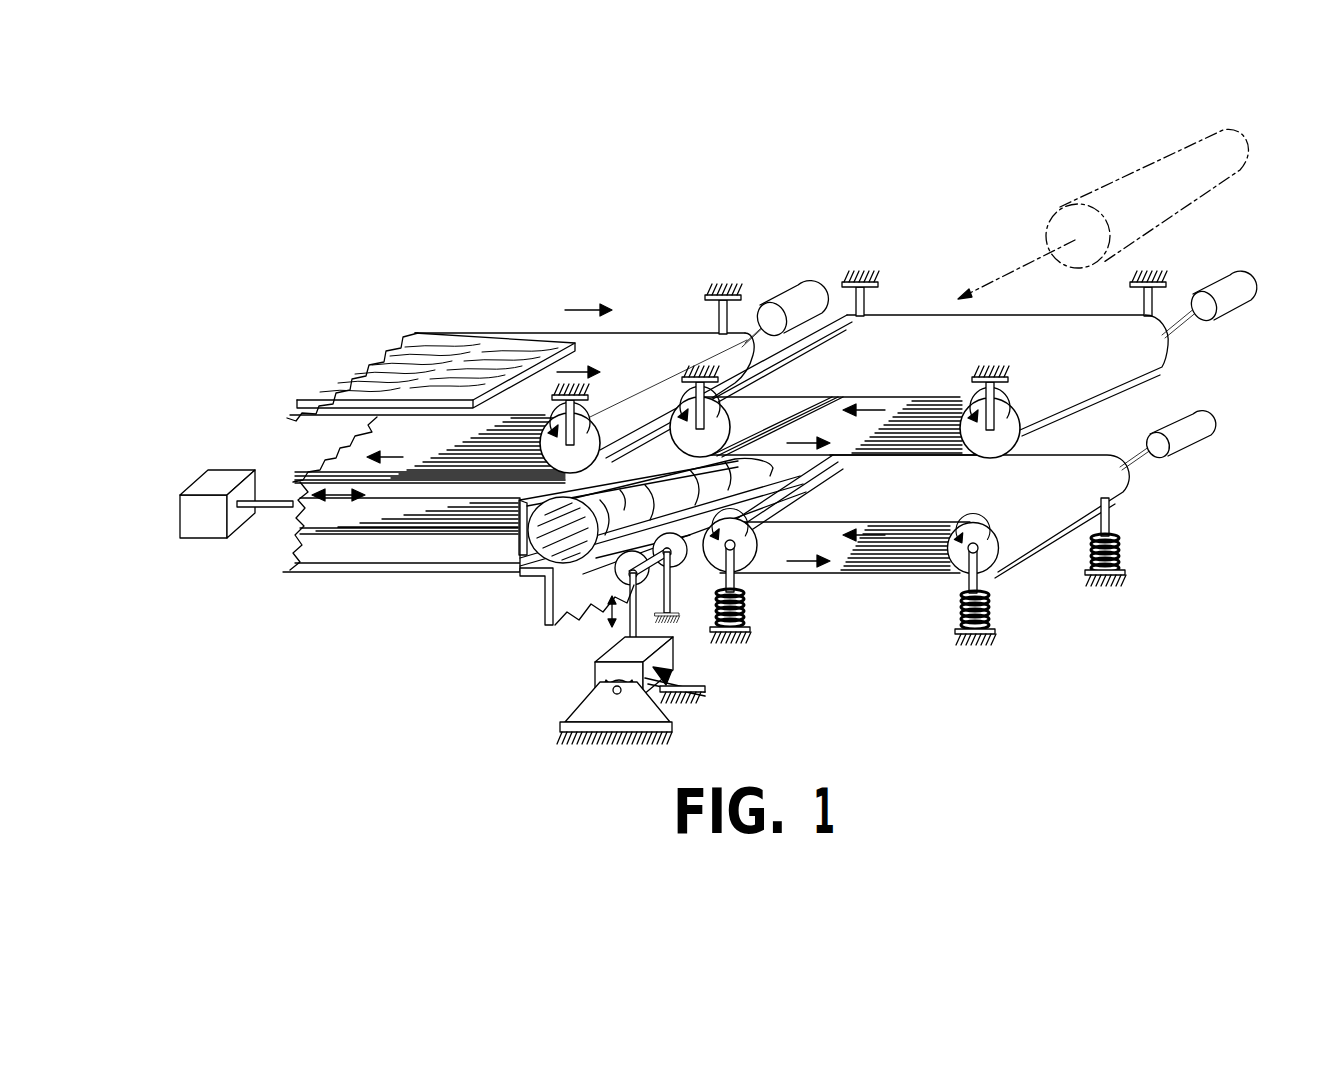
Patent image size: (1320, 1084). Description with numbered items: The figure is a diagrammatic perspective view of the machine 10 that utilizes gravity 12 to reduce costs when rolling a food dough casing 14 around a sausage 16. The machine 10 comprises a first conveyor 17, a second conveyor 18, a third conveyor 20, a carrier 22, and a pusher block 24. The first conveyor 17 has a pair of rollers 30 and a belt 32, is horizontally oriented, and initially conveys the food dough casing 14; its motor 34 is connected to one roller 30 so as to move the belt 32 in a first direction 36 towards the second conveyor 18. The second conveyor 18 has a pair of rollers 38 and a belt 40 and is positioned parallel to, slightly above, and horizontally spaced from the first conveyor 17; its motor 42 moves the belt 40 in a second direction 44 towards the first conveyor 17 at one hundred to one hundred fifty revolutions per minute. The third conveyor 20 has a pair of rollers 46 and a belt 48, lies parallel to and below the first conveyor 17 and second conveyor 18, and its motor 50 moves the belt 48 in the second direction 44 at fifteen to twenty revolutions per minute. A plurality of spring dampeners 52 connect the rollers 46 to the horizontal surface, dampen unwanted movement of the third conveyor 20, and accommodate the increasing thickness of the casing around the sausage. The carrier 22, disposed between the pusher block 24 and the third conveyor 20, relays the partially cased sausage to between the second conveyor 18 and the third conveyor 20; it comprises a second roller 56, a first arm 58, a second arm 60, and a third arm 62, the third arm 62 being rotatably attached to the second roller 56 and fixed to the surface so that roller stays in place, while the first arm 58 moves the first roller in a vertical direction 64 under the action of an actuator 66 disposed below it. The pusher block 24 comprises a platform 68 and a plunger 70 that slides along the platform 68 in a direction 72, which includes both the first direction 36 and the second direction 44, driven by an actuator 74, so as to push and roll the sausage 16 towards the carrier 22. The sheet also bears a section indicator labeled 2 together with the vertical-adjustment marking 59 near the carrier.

The machine 10 is at (795, 204).
The gravity 12 is at (657, 290).
The food dough casing 14 is at (365, 338).
The sausage 16 is at (515, 578).
The first conveyor 17 is at (478, 305).
The second conveyor 18 is at (905, 290).
The third conveyor 20 is at (836, 597).
The carrier 22 is at (655, 633).
The pusher block 24 is at (358, 556).
The rollers 30 is at (525, 432).
The belt 32 is at (694, 312).
The motor 34 is at (792, 272).
The first direction 36 is at (565, 310).
The rollers 38 is at (658, 403).
The belt 40 is at (1172, 384).
The motor 42 is at (1210, 275).
The second direction 44 is at (878, 408).
The rollers 46 is at (1015, 530).
The belt 48 is at (897, 590).
The motor 50 is at (1208, 460).
The spring dampeners 52 is at (770, 628).
The second roller 56 is at (671, 568).
The first arm 58 is at (610, 646).
The vertical adjustment 59 is at (594, 599).
The second arm 60 is at (646, 536).
The third arm 62 is at (698, 608).
The vertical direction 64 is at (547, 633).
The actuator 66 is at (705, 690).
The platform 68 is at (285, 590).
The plunger 70 is at (272, 540).
The direction 72 is at (340, 495).
The actuator 74 is at (174, 478).
The section views 2-7 indicator 2 is at (503, 614).